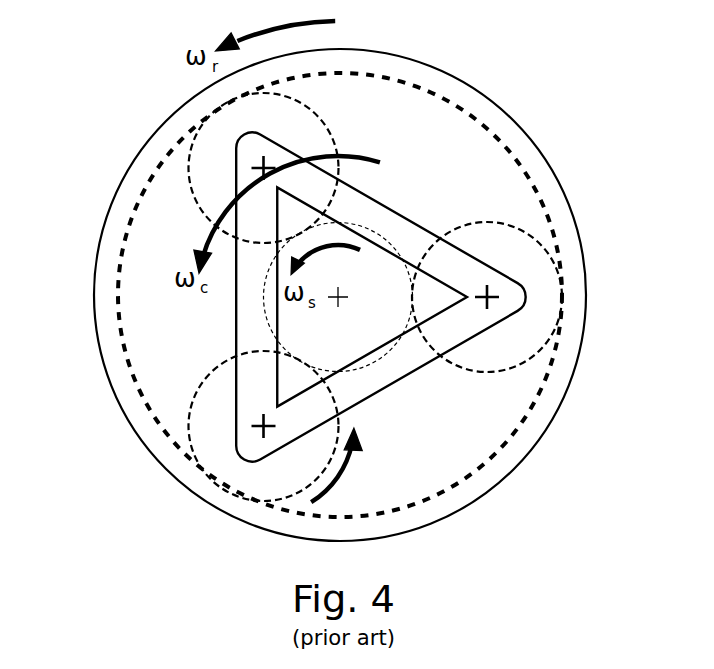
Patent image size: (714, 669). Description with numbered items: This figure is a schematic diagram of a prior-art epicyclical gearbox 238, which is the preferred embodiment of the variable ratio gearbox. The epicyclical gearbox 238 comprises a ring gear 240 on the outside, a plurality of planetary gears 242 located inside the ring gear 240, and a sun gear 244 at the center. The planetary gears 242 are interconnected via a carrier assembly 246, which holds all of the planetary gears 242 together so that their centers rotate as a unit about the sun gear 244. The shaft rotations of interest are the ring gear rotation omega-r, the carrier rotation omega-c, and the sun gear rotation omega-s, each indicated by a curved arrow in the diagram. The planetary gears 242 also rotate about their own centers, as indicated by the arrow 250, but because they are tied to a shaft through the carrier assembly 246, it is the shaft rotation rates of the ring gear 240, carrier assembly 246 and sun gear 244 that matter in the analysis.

The epicyclical gearbox 238 is at (123, 483).
The ring gear 240 is at (448, 65).
The planetary gears 242 is at (513, 217).
The sun gear 244 is at (358, 327).
The carrier assembly 246 is at (397, 193).
The arrow 250 is at (350, 478).